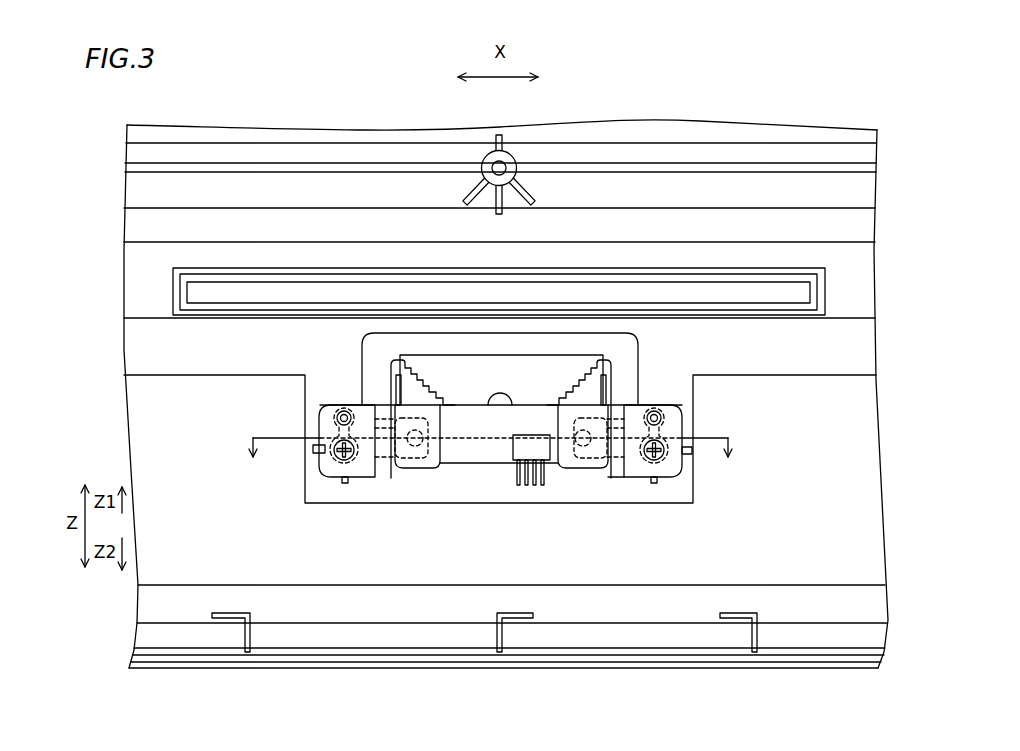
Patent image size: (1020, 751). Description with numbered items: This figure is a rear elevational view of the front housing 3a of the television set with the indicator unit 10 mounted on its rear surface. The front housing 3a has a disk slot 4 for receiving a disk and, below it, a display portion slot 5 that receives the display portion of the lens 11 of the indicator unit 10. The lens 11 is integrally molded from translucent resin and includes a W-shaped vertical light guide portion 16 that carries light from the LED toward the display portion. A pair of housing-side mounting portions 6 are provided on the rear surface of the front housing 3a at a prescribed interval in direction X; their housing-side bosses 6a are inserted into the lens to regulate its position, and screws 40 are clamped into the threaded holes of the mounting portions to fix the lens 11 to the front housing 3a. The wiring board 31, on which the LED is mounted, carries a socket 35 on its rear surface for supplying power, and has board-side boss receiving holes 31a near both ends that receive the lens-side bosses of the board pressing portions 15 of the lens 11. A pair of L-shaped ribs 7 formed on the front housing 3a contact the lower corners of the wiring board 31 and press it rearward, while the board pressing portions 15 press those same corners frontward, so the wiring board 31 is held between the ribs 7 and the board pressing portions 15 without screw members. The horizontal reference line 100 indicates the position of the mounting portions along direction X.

The front housing 3a is at (812, 185).
The disk slot 4 is at (615, 300).
The display portion slot 5 is at (408, 336).
The housing-side mounting portion 6 is at (330, 478).
The housing-side boss 6a is at (333, 413).
The rib 7 is at (393, 392).
The indicator unit 10 is at (385, 491).
The lens 11 is at (617, 354).
The board pressing portion 15 is at (391, 479).
The vertical light guide portion 16 is at (543, 385).
The wiring board 31 is at (463, 440).
The board-side boss receiving hole 31a is at (414, 447).
The socket 35 is at (512, 452).
The screw 40 is at (319, 455).
The reference axis line 100 is at (490, 458).